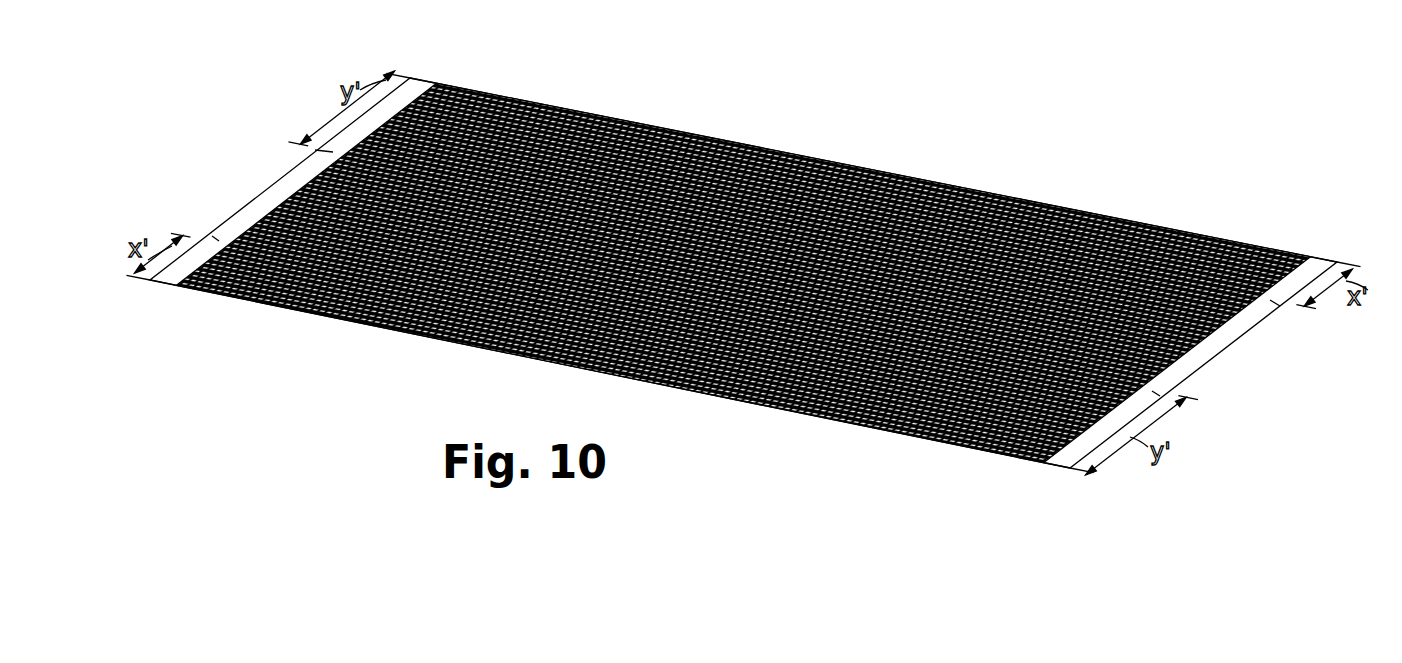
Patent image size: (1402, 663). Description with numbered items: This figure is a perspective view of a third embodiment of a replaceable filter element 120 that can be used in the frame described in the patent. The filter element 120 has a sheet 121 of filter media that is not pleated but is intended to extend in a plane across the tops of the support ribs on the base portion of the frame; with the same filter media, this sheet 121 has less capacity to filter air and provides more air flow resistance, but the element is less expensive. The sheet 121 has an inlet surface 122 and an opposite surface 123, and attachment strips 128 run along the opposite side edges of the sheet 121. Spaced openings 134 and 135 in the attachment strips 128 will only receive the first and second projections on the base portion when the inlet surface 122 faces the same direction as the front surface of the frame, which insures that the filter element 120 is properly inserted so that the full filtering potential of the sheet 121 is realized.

The filter element 120 is at (750, 276).
The sheet 121 is at (848, 165).
The inlet surface 122 is at (612, 118).
The second edge 123 is at (847, 423).
The attachment strips 128 is at (293, 173).
The spaced openings 134 is at (215, 238).
The spaced openings 135 is at (330, 150).